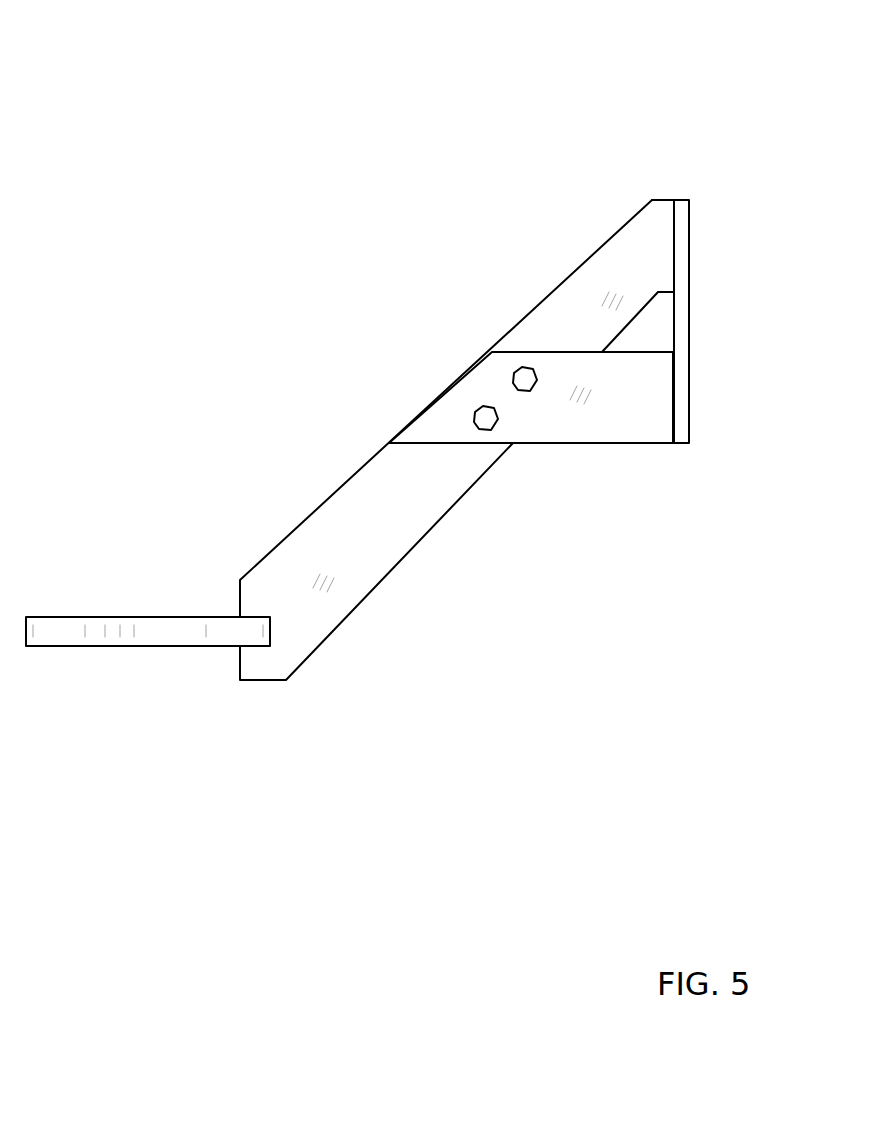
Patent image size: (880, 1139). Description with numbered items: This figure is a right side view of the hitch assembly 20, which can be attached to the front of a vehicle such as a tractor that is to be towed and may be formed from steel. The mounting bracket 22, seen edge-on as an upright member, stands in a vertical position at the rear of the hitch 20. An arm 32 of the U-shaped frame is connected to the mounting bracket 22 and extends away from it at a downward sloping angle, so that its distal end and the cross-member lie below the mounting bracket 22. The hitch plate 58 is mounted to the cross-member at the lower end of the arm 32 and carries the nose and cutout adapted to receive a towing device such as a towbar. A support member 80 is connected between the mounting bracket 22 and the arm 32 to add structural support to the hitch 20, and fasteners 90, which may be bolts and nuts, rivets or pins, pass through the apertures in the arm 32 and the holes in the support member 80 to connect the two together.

The hitch assembly 20 is at (280, 173).
The mounting bracket 22 is at (692, 322).
The arm 32 is at (298, 522).
The hitch plate 58 is at (103, 615).
The support member 80 is at (603, 443).
The fastener 90 is at (486, 420).